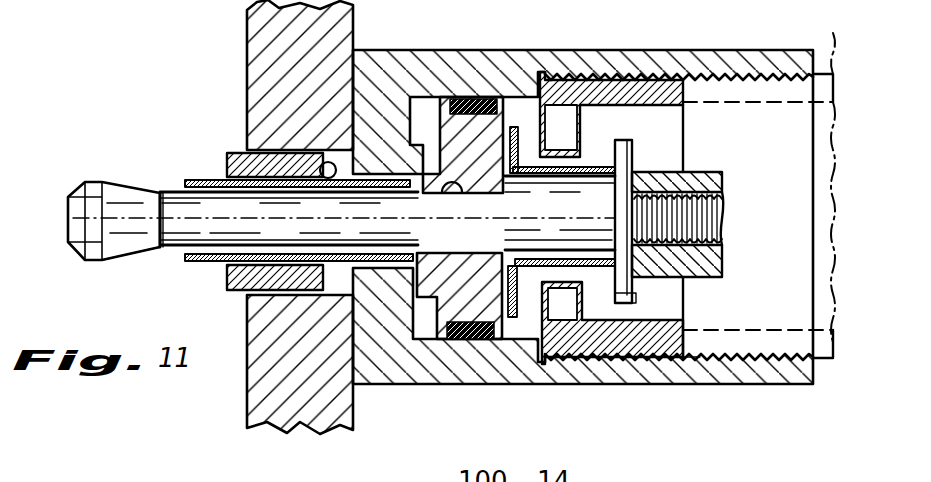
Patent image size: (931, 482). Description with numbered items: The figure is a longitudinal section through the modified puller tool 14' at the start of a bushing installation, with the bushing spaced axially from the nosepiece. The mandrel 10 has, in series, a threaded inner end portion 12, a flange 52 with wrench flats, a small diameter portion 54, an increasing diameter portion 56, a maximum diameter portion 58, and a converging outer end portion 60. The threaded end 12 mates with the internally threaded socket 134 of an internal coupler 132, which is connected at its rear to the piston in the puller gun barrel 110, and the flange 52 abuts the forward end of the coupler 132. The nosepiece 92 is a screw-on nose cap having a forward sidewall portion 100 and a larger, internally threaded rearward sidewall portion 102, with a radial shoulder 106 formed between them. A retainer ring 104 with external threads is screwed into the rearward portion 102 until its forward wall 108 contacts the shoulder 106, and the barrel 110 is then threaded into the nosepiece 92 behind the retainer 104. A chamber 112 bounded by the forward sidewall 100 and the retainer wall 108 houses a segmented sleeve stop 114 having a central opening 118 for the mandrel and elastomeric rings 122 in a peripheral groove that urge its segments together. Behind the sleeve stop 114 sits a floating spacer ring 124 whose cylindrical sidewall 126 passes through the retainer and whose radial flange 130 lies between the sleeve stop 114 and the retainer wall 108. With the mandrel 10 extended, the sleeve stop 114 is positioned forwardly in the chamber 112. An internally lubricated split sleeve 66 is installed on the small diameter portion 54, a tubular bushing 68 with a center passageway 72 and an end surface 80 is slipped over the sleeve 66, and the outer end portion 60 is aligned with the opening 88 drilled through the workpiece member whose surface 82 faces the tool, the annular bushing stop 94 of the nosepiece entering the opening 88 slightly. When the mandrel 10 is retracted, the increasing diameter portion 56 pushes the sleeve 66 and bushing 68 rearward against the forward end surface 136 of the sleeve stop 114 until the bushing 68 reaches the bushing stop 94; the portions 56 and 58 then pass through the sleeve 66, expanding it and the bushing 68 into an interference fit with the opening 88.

The mandrel 10 is at (242, 233).
The inner end portion 12 is at (725, 212).
The puller tool 14' is at (515, 27).
The flange 52 is at (632, 293).
The small diameter portion 54 is at (160, 249).
The increasing diameter portion 56 is at (80, 250).
The maximum diameter portion 58 is at (97, 178).
The converging outer end portion 60 is at (77, 207).
The split sleeve 66 is at (187, 182).
The tubular bushing 68 is at (227, 158).
The center passageway 72 is at (297, 152).
The end surface 80 is at (333, 173).
The surface portion 82 is at (353, 28).
The opening 88 is at (230, 280).
The nosepiece 92 is at (653, 393).
The annular bushing stop 94 is at (350, 297).
The forward sidewall portion 100 is at (452, 52).
The rearward sidewall portion 102 is at (670, 67).
The retainer ring 104 is at (666, 344).
The radial shoulder 106 is at (556, 358).
The forward wall 108 is at (597, 358).
The puller gun barrel 110 is at (843, 182).
The chamber 112 is at (420, 343).
The segmented sleeve stop 114 is at (500, 332).
The central opening 118 is at (453, 194).
The elastomeric rings 122 is at (472, 338).
The floating spacer ring 124 is at (556, 174).
The cylindrical sidewall 126 is at (598, 152).
The radial flange 130 is at (540, 132).
The internal coupler 132 is at (712, 278).
The internally threaded socket 134 is at (690, 204).
The forward end surface 136 is at (410, 158).